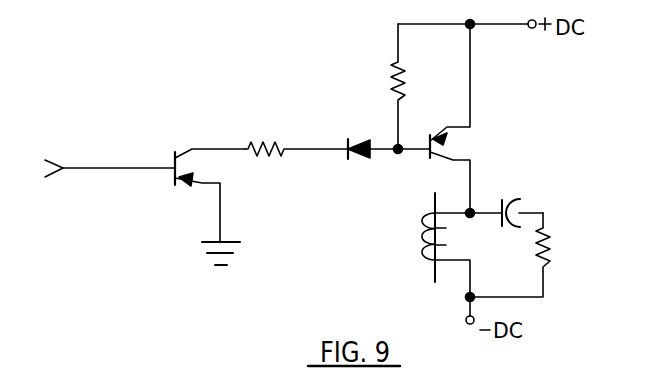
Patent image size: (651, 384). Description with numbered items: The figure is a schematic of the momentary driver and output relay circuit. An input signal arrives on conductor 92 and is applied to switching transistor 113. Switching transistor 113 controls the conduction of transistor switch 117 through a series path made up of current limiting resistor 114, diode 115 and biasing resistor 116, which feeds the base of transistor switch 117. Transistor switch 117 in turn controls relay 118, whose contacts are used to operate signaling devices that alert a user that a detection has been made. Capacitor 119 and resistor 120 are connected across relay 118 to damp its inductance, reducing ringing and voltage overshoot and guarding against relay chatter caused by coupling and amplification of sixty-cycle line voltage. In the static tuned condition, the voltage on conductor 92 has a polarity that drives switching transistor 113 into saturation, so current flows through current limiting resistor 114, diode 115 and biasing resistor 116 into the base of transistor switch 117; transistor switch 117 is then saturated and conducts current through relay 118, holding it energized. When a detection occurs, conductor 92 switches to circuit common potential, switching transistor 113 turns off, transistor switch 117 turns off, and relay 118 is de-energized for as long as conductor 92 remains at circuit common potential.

The conductor 92 is at (110, 160).
The switching transistor 113 is at (203, 195).
The current limiting resistor 114 is at (296, 134).
The diode 115 is at (388, 135).
The biasing resistor 116 is at (386, 86).
The transistor switch 117 is at (459, 118).
The relay 118 is at (431, 245).
The capacitor 119 is at (506, 203).
The resistor 120 is at (525, 255).